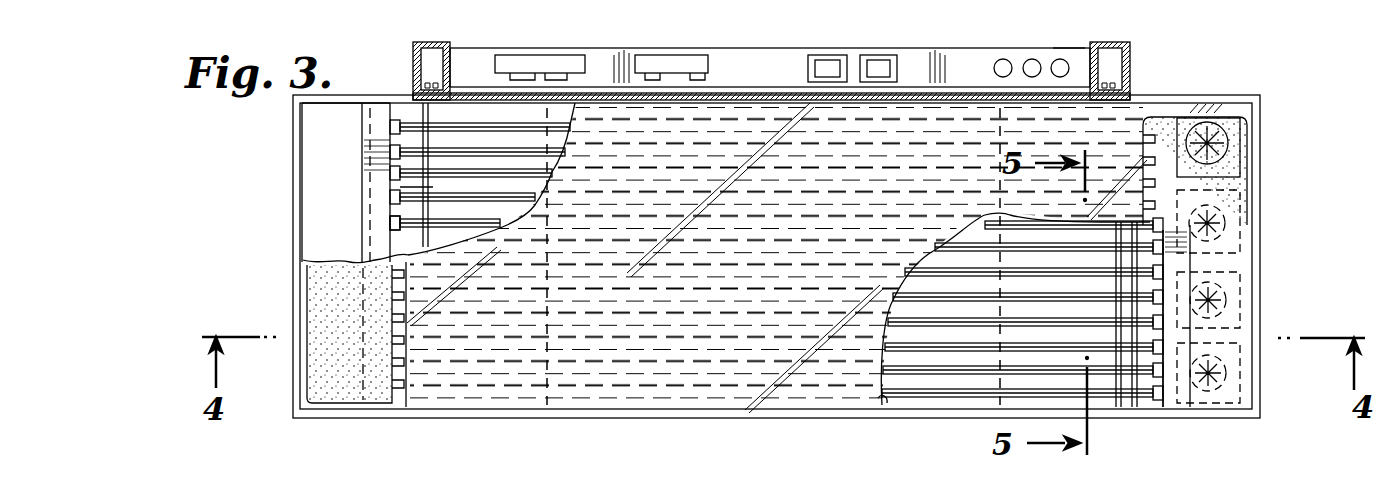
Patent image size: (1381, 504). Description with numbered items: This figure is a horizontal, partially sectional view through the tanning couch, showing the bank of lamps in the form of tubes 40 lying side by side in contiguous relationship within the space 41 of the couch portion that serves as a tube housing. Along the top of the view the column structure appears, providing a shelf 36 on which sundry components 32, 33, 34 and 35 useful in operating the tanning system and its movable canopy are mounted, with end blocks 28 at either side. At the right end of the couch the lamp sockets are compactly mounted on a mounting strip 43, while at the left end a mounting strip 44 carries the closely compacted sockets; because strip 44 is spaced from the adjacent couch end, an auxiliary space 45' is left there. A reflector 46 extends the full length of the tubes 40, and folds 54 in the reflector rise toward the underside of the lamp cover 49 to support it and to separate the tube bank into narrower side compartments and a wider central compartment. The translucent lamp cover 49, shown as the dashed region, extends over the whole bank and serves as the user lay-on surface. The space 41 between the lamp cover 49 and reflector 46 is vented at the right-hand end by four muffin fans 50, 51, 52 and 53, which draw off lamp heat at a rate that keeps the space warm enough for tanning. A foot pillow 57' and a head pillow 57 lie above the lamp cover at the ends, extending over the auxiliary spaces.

The end connector block 28 is at (413, 50).
The component 32 is at (553, 57).
The component 33 is at (681, 60).
The component 34 is at (823, 58).
The component 35 is at (1003, 66).
The shelf 36 is at (1053, 48).
The tubes 40 is at (478, 152).
The space 41 is at (860, 407).
The mounting strip 43 is at (1170, 400).
The mounting strip 44 is at (377, 128).
The auxiliary space 45' is at (306, 183).
The reflector 46 is at (393, 225).
The lamp cover 49 is at (625, 390).
The muffin fan 50 is at (1227, 143).
The muffin fan 51 is at (1233, 212).
The muffin fan 52 is at (1233, 303).
The muffin fan 53 is at (1250, 393).
The folds 54 is at (433, 187).
The pillow 57 is at (338, 361).
The pillow 57' is at (1220, 224).